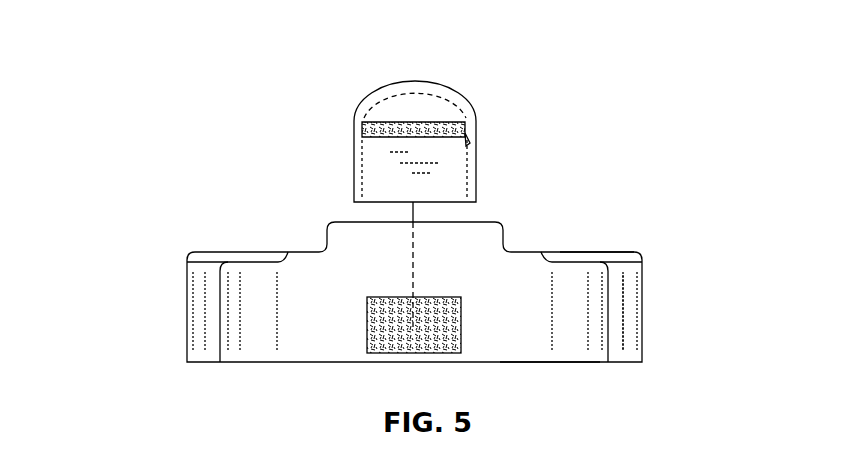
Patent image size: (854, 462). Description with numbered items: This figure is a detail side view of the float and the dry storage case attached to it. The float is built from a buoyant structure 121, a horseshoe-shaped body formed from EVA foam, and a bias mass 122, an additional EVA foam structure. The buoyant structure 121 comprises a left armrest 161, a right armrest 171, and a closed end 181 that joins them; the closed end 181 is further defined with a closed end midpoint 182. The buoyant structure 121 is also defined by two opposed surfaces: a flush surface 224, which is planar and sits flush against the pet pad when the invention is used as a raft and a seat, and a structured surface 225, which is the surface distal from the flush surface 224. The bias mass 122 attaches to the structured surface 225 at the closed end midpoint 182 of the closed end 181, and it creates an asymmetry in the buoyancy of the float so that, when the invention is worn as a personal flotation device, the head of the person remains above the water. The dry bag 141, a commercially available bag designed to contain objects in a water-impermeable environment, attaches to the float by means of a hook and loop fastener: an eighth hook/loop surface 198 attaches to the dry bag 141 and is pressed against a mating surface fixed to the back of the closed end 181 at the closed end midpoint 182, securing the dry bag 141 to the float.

The dry bag 141 is at (438, 104).
The bias mass 122 is at (473, 232).
The structured surface 225 is at (577, 253).
The right armrest 171 is at (646, 282).
The left armrest 161 is at (178, 296).
The buoyant structure 121 is at (623, 313).
The closed end midpoint 182 is at (412, 243).
The eighth hook/loop surface 198 is at (432, 300).
The closed end 181 is at (483, 317).
The flush surface 224 is at (542, 362).